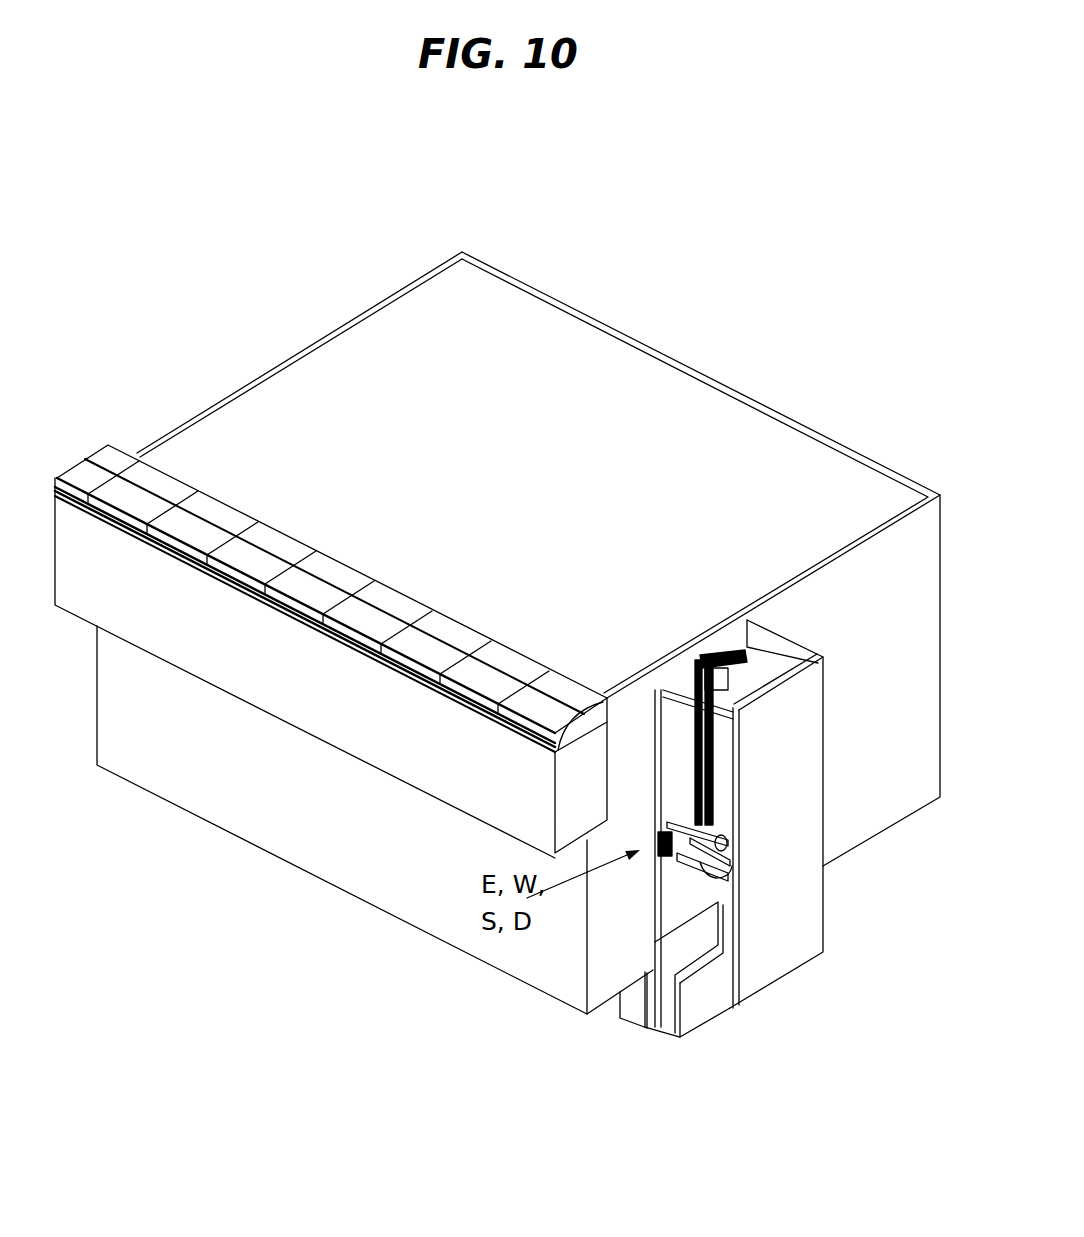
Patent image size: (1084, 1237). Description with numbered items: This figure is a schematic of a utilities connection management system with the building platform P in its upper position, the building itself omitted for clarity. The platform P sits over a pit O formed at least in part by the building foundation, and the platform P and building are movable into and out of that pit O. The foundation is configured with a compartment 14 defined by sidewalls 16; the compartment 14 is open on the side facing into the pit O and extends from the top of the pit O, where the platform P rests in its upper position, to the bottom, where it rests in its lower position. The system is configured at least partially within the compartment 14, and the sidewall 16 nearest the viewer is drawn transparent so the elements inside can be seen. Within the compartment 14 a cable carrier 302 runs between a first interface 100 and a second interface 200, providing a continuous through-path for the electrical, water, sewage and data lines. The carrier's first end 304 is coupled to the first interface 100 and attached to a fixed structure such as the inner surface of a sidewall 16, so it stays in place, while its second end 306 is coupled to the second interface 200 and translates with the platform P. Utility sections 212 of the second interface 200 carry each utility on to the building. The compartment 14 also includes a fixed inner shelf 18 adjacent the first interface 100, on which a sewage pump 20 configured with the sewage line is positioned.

The platform P is at (578, 400).
The pit O is at (348, 506).
The compartment 14 is at (761, 817).
The sidewalls 16 is at (808, 640).
The inner shelf 18 is at (694, 868).
The sewage pump 20 is at (707, 870).
The first interface 100 is at (642, 694).
The second interface 200 is at (688, 657).
The utility sections 212 is at (729, 633).
The cable carrier 302 is at (680, 757).
The first end 304 is at (639, 823).
The second end 306 is at (668, 675).